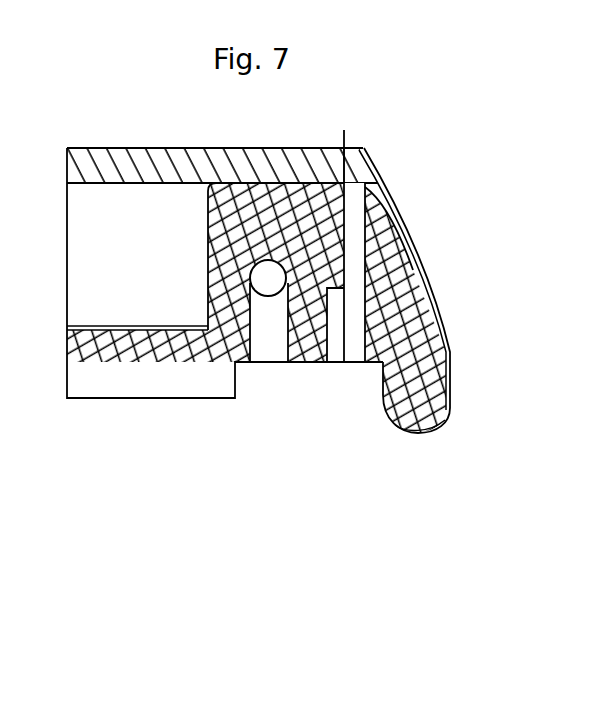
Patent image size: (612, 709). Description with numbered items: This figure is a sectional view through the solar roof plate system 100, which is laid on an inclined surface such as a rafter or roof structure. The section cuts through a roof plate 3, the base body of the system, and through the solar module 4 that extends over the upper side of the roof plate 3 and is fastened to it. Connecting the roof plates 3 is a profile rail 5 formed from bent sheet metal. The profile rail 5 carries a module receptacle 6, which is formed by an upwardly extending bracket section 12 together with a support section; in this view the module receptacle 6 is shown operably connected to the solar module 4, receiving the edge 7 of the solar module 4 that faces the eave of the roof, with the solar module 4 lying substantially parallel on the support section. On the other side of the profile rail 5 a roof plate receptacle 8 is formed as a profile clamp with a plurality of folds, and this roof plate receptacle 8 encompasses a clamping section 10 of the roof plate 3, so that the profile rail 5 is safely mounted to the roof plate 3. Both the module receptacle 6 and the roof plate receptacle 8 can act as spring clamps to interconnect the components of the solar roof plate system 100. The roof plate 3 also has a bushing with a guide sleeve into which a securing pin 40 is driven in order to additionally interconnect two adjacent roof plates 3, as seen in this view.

The solar roof plate system 100 is at (258, 655).
The roof plate 3 is at (215, 335).
The solar module 4 is at (183, 168).
The profile rail 5 is at (397, 195).
The module receptacle 6 is at (370, 167).
The edge 7 is at (364, 149).
The roof plate receptacle 8 is at (453, 413).
The clamp section 10 is at (388, 400).
The bracket section 12 is at (354, 164).
The securing pin 40 is at (272, 274).